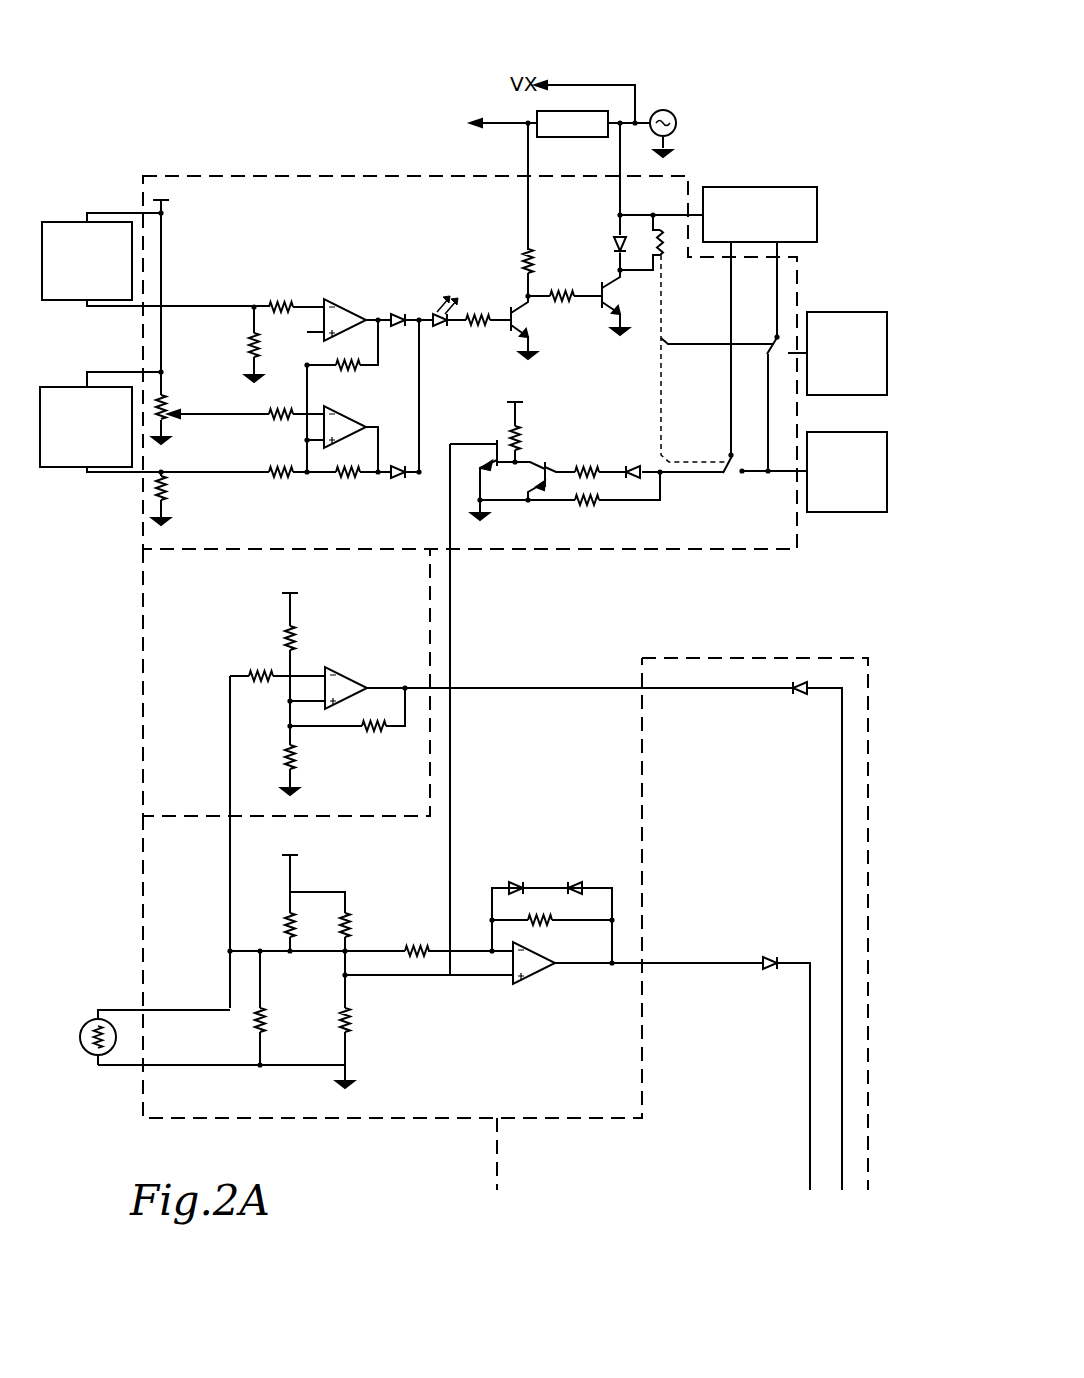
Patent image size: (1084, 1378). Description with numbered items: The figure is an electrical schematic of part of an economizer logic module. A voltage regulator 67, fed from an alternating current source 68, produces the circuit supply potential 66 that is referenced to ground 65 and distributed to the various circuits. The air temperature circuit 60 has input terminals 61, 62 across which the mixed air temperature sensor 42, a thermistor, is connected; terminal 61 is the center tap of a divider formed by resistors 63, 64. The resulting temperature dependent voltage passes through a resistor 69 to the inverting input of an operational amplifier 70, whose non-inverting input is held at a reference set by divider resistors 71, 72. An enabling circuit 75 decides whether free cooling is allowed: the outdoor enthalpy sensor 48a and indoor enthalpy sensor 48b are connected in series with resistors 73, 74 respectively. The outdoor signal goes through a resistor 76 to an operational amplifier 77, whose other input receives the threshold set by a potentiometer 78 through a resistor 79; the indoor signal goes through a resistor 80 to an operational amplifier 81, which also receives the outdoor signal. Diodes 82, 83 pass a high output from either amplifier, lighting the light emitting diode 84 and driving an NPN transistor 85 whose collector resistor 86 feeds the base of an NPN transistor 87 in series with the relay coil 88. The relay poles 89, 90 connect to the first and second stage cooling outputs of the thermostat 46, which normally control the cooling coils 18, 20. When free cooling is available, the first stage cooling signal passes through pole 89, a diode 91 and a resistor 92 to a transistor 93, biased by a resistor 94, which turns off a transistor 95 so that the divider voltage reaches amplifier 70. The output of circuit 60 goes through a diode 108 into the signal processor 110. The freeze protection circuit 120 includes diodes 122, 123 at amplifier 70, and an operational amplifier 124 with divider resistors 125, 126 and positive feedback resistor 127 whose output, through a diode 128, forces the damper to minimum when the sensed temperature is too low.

The cooling coil 18 is at (851, 512).
The cooling coil 20 is at (846, 312).
The mixed air temperature sensor 42 is at (88, 1022).
The thermostat 46 is at (817, 188).
The outdoor enthalpy sensor 48a is at (58, 470).
The indoor enthalpy sensor 48b is at (62, 302).
The air temperature circuit 60 is at (128, 893).
The input terminal 61 is at (236, 948).
The input terminal 62 is at (222, 1062).
The resistor 63 is at (296, 930).
The resistor 64 is at (266, 1025).
The ground 65 is at (668, 152).
The circuit supply potential 66 is at (481, 120).
The voltage regulator 67 is at (537, 111).
The alternating current source 68 is at (668, 110).
The resistor 69 is at (412, 945).
The operational amplifier 70 is at (540, 970).
The resistor 71 is at (350, 915).
The resistor 72 is at (352, 1025).
The resistor 73 is at (167, 485).
The resistor 74 is at (258, 350).
The enabling circuit 75 is at (125, 538).
The resistor 76 is at (283, 478).
The operational amplifier 77 is at (350, 410).
The potentiometer 78 is at (170, 405).
The resistor 79 is at (283, 423).
The resistor 80 is at (279, 300).
The operational amplifier 81 is at (347, 304).
The diode 82 is at (397, 480).
The diode 83 is at (398, 312).
The light emitting diode 84 is at (443, 328).
The NPN transistor 85 is at (508, 310).
The resistor 86 is at (526, 262).
The NPN transistor 87 is at (602, 292).
The relay coil 88 is at (664, 248).
The relay pole 89 is at (728, 458).
The relay pole 90 is at (775, 337).
The diode 91 is at (634, 467).
The resistor 92 is at (590, 468).
The NPN transistor 93 is at (548, 464).
The resistor 94 is at (512, 440).
The NPN transistor 95 is at (491, 466).
The diode 108 is at (767, 960).
The signal processor 110 is at (773, 642).
The freeze protection circuit 120 is at (128, 698).
The diode 122 is at (578, 886).
The diode 123 is at (512, 886).
The operational amplifier 124 is at (352, 675).
The voltage divider resistor 125 is at (296, 635).
The voltage divider resistor 126 is at (296, 758).
The positive feedback resistor 127 is at (376, 735).
The diode 128 is at (805, 692).